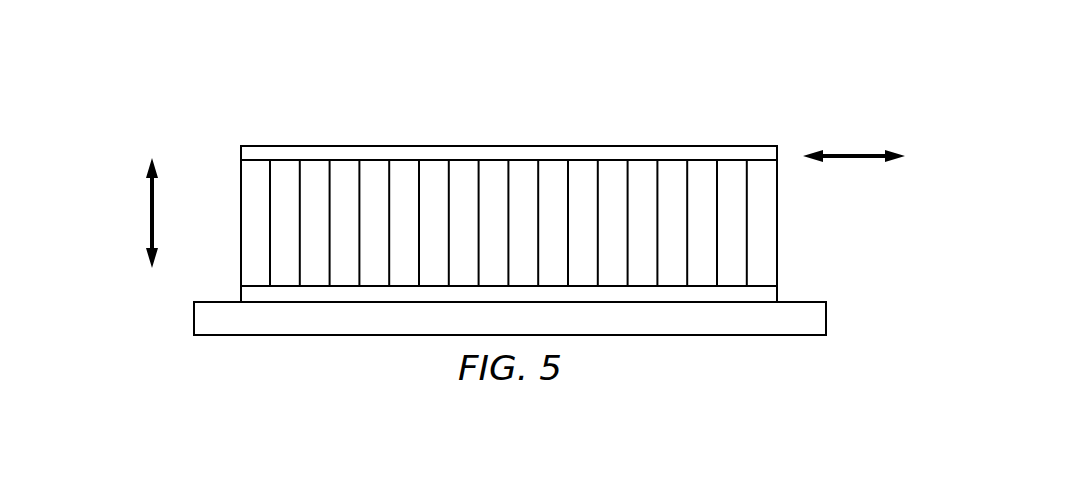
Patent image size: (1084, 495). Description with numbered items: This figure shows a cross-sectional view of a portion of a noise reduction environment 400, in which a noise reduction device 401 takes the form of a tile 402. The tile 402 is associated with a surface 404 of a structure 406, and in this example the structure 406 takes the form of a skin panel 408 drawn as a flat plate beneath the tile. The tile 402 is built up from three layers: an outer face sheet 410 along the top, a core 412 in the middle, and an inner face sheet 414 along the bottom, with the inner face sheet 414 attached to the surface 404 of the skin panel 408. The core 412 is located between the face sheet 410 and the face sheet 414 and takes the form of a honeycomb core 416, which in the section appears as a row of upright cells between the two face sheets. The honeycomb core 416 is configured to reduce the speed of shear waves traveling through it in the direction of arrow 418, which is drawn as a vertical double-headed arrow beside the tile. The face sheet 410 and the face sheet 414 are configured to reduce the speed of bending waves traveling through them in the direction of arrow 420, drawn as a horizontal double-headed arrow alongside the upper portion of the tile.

The noise reduction environment 400 is at (660, 118).
The noise reduction device 401 is at (352, 145).
The tile 402 is at (447, 145).
The surface 404 is at (798, 302).
The structure 406 is at (207, 318).
The skin panel 408 is at (260, 322).
The face sheet 410 is at (240, 150).
The core 412 is at (250, 218).
The face sheet 414 is at (241, 293).
The honeycomb core 416 is at (765, 220).
The arrow 418 is at (148, 215).
The arrow 420 is at (855, 152).